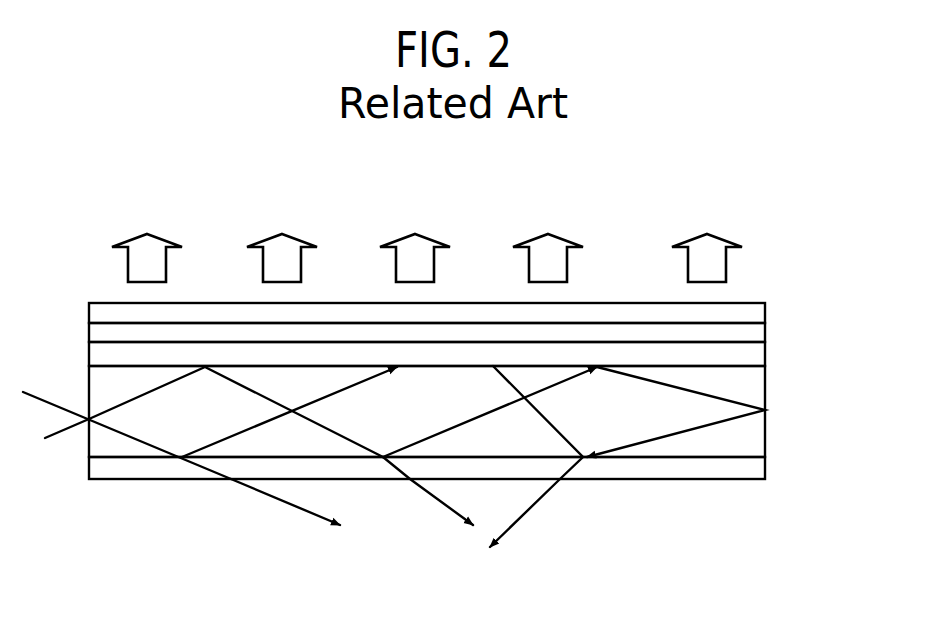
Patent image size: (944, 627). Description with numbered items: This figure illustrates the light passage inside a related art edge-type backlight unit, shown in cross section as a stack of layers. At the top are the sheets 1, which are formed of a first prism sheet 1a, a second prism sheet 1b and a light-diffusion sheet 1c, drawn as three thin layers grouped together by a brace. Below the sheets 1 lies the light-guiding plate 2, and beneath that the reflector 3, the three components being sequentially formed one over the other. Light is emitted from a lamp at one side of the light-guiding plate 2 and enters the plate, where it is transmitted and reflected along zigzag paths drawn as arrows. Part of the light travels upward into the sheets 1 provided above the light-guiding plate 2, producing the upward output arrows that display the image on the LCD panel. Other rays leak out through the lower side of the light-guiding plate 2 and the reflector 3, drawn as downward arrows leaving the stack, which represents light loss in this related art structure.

The sheets 1 is at (481, 333).
The first prism sheet 1a is at (760, 310).
The second prism sheet 1b is at (760, 333).
The light-diffusion sheet 1c is at (760, 355).
The light-guiding plate 2 is at (760, 390).
The reflector 3 is at (760, 465).